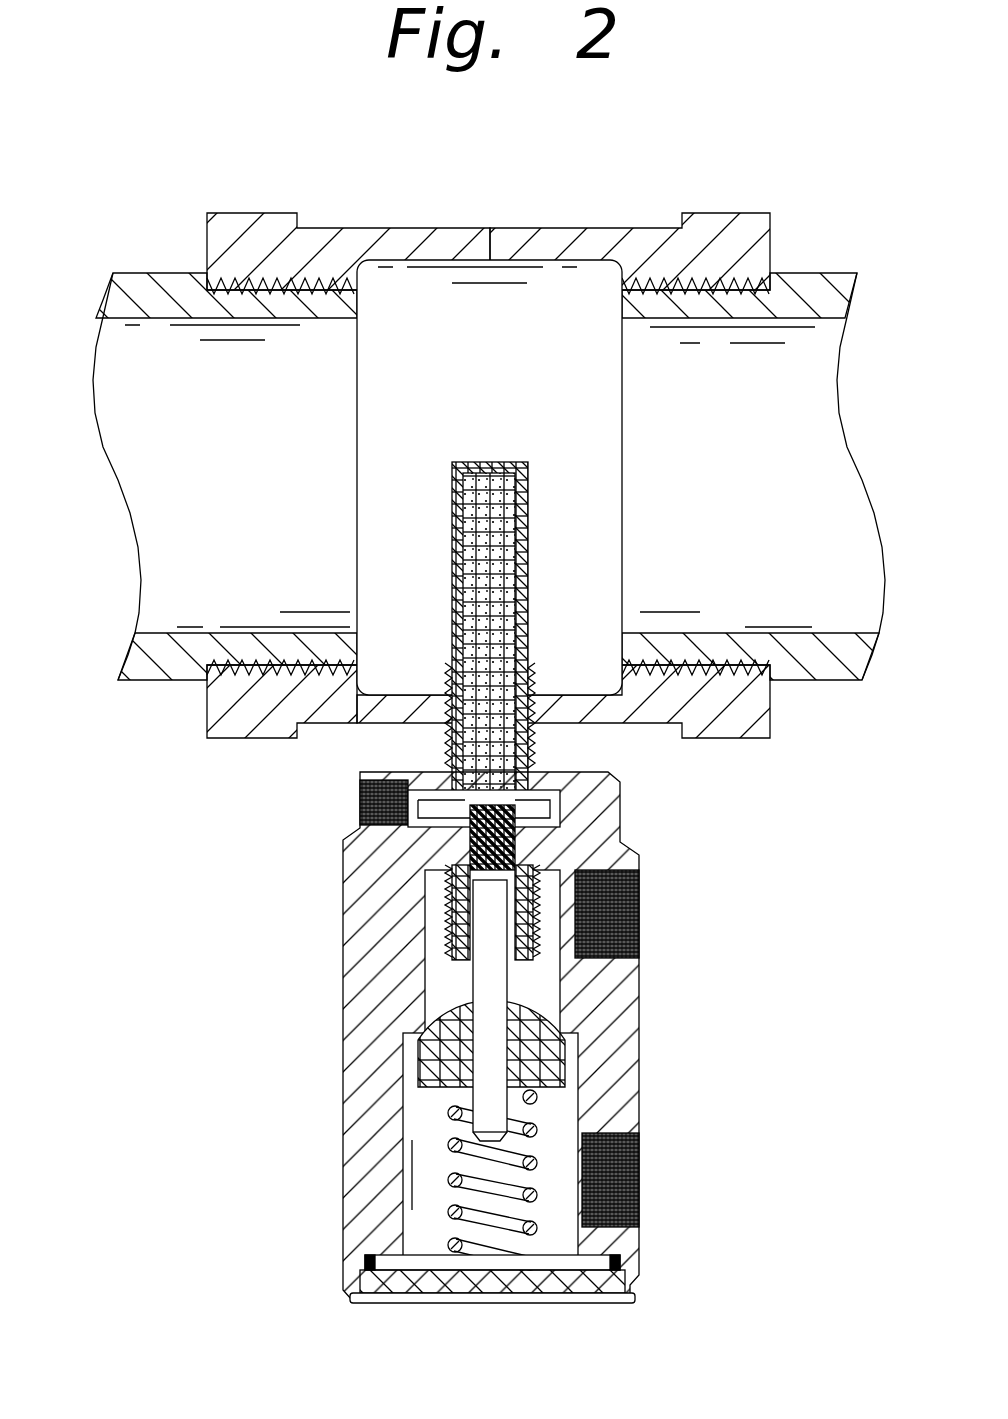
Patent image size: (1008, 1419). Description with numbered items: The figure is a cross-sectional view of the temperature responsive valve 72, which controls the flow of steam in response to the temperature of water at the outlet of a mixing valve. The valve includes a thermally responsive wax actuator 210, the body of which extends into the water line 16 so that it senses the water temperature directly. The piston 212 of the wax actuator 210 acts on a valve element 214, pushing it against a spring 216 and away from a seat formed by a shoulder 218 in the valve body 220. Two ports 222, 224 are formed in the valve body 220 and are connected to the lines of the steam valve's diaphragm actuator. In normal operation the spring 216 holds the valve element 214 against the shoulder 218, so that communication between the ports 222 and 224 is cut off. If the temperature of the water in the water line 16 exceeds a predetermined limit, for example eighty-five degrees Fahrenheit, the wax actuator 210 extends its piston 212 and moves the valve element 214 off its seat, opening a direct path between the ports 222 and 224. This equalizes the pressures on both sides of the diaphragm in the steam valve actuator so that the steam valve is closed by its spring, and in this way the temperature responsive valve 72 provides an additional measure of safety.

The water line 16 is at (170, 270).
The temperature responsive valve 72 is at (476, 1066).
The thermally responsive wax actuator 210 is at (452, 497).
The piston 212 is at (495, 968).
The valve element 214 is at (555, 1070).
The spring 216 is at (528, 1230).
The shoulder 218 is at (405, 1055).
The valve body 220 is at (345, 930).
The port 222 is at (640, 918).
The port 224 is at (640, 1190).